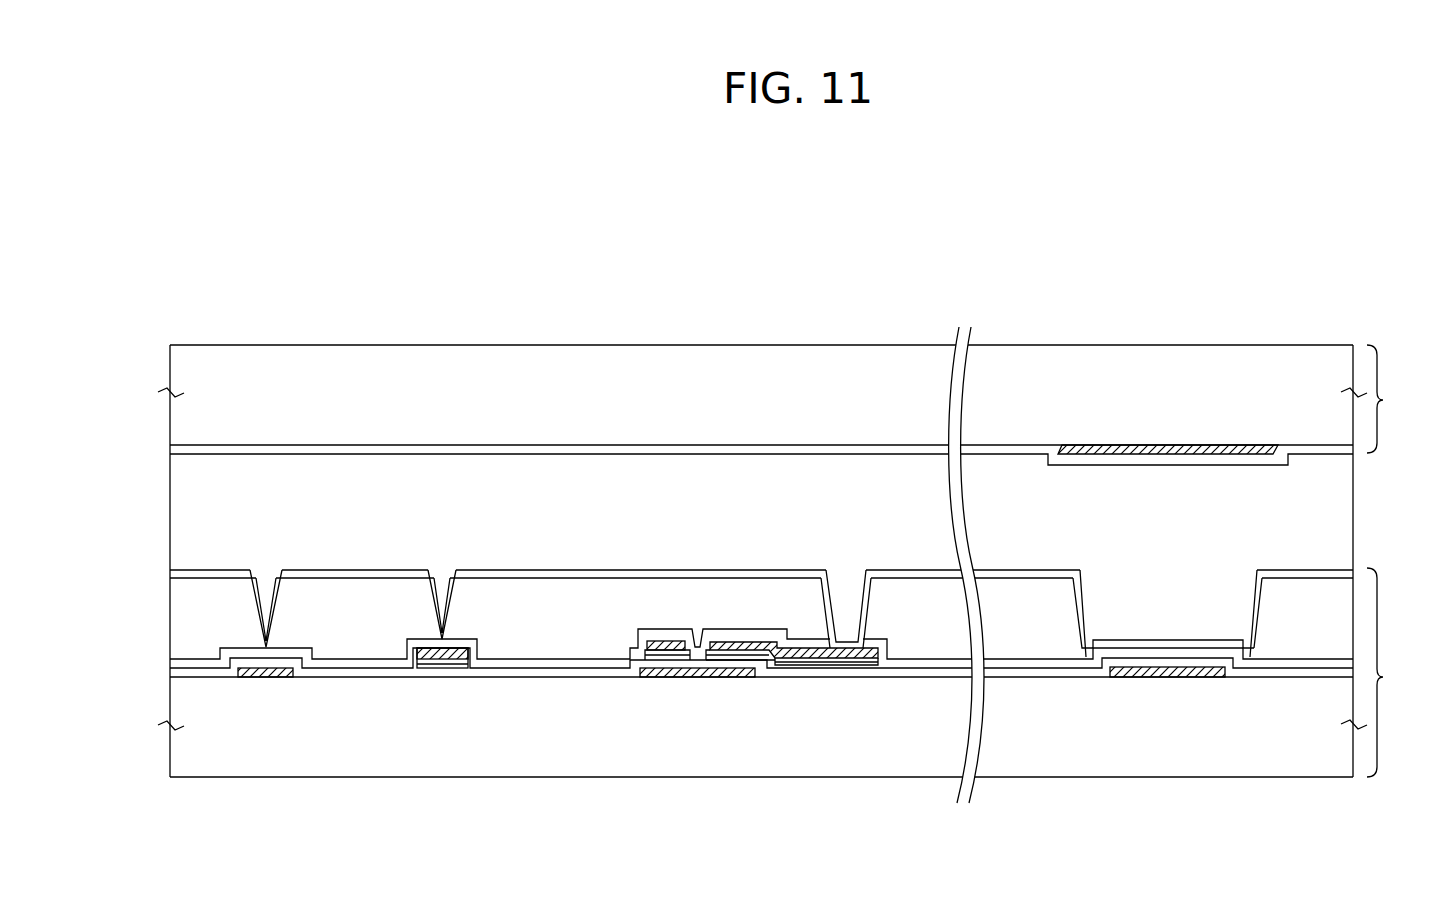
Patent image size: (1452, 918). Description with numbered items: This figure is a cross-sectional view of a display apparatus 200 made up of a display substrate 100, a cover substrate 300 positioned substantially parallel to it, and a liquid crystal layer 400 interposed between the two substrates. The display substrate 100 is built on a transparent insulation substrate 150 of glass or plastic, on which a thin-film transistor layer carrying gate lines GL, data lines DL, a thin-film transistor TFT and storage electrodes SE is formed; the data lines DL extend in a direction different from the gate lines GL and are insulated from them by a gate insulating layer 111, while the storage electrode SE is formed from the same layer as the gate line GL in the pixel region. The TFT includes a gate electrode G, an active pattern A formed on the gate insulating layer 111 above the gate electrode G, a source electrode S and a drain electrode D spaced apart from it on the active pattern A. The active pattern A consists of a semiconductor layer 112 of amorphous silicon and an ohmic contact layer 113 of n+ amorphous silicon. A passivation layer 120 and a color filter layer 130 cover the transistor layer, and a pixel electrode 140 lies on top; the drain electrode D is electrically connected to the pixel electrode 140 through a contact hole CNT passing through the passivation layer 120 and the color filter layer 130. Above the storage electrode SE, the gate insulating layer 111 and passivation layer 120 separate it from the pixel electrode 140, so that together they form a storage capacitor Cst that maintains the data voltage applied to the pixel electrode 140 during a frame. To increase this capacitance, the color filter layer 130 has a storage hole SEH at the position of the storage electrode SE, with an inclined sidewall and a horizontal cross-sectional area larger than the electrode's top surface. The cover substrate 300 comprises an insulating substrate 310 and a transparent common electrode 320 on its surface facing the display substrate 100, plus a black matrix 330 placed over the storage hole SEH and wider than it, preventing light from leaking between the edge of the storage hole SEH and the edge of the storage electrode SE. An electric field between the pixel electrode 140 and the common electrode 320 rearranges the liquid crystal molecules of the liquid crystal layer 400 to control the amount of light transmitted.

The display substrate 100 is at (798, 672).
The gate insulating layer 111 is at (500, 672).
The semiconductor layer 112 is at (793, 665).
The ohmic contact layer 113 is at (850, 662).
The passivation layer 120 is at (568, 663).
The color filter layer 130 is at (1300, 635).
The pixel electrode 140 is at (1015, 574).
The transparent insulation substrate 150 is at (350, 742).
The display apparatus 200 is at (783, 244).
The cover substrate 300 is at (797, 399).
The insulating substrate 310 is at (1020, 387).
The common electrode 320 is at (878, 445).
The black matrix 330 is at (1167, 448).
The liquid crystal layer 400 is at (1338, 512).
The gate line GL is at (267, 677).
The data line DL is at (437, 663).
The source electrode S is at (661, 650).
The gate electrode G is at (700, 672).
The drain electrode D is at (743, 650).
The active pattern A is at (826, 772).
The thin-film transistor TFT is at (759, 693).
The contact hole CNT is at (849, 579).
The storage capacitor Cst is at (1163, 690).
The storage electrode SE is at (1165, 677).
The storage hole SEH is at (1080, 625).